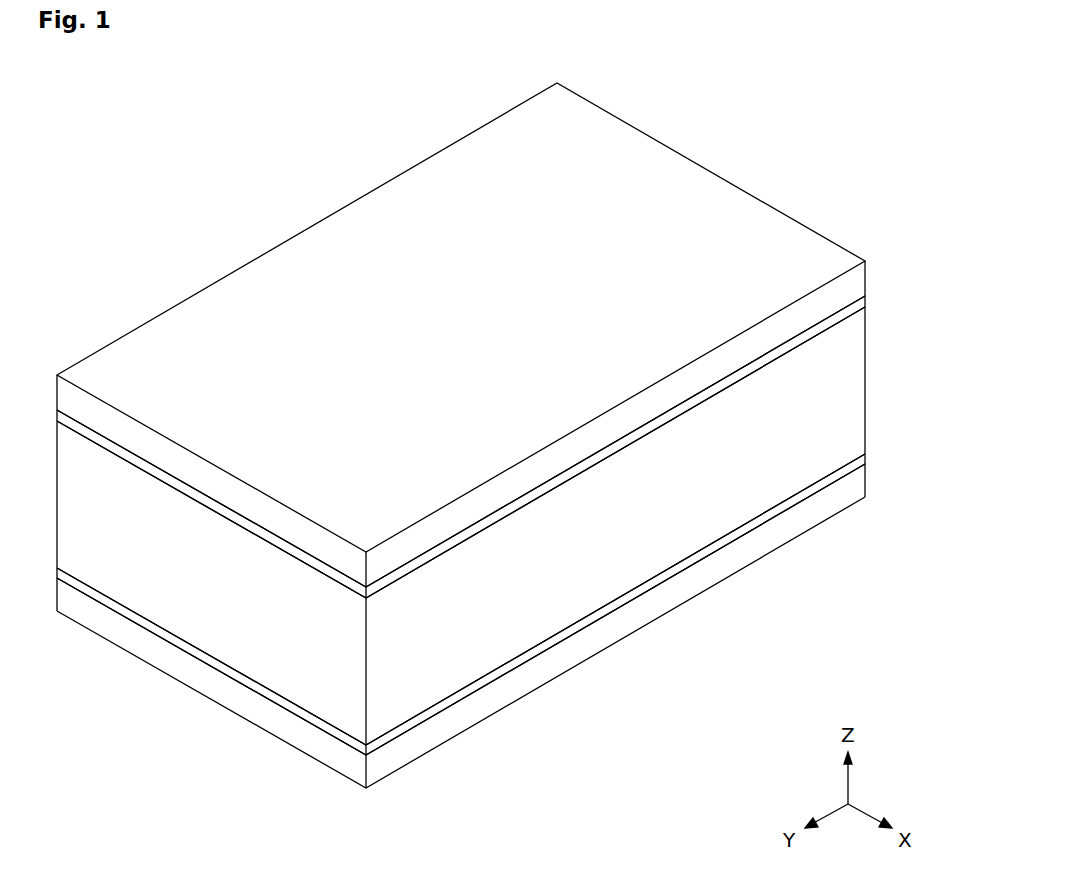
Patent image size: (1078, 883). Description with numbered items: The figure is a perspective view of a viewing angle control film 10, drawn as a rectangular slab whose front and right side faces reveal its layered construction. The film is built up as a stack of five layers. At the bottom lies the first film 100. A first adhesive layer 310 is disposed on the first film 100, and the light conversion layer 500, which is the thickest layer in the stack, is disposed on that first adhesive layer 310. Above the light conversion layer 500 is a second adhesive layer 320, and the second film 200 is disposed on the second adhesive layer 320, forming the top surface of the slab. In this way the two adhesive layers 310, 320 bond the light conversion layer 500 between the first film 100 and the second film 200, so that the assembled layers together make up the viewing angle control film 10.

The viewing angle control film 10 is at (945, 105).
The first film 100 is at (848, 487).
The second film 200 is at (858, 288).
The first adhesive layer 310 is at (858, 460).
The second adhesive layer 320 is at (858, 310).
The light conversion layer 500 is at (850, 403).